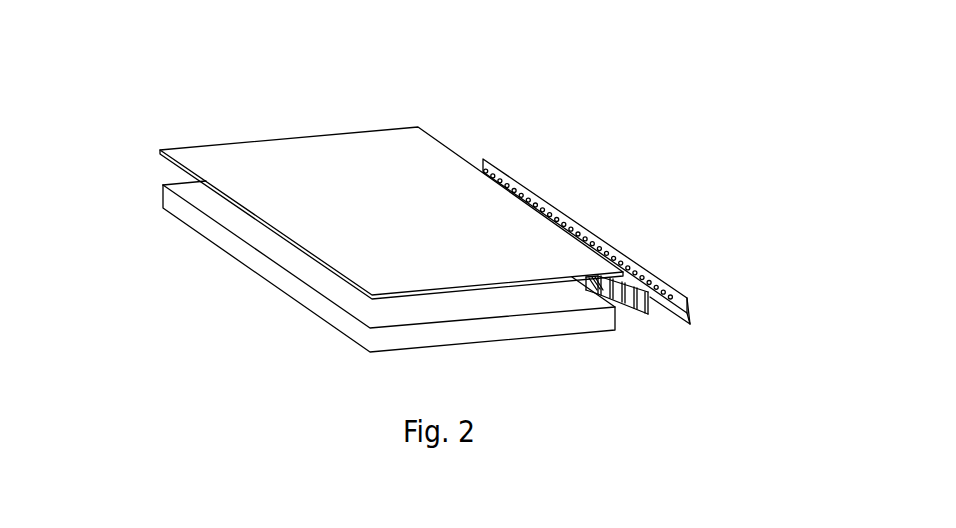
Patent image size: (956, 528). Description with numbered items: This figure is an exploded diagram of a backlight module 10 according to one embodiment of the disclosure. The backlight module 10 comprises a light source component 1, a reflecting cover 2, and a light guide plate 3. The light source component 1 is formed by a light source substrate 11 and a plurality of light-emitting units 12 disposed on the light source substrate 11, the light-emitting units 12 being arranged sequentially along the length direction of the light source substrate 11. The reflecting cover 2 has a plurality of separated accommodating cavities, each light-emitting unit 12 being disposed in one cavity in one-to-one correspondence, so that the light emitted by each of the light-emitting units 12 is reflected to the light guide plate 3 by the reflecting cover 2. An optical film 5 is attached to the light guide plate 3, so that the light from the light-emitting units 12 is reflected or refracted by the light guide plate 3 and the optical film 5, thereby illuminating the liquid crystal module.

The backlight module 10 is at (172, 106).
The light source component 1 is at (746, 283).
The light source substrate 11 is at (685, 311).
The light-emitting units 12 is at (672, 298).
The reflecting cover 2 is at (647, 304).
The light guide plate 3 is at (262, 242).
The optical film 5 is at (253, 176).